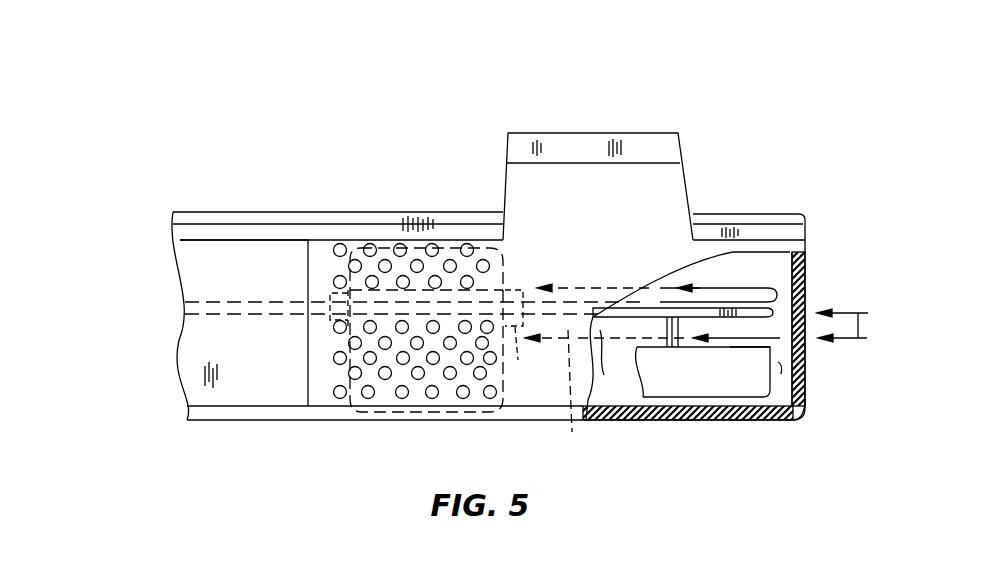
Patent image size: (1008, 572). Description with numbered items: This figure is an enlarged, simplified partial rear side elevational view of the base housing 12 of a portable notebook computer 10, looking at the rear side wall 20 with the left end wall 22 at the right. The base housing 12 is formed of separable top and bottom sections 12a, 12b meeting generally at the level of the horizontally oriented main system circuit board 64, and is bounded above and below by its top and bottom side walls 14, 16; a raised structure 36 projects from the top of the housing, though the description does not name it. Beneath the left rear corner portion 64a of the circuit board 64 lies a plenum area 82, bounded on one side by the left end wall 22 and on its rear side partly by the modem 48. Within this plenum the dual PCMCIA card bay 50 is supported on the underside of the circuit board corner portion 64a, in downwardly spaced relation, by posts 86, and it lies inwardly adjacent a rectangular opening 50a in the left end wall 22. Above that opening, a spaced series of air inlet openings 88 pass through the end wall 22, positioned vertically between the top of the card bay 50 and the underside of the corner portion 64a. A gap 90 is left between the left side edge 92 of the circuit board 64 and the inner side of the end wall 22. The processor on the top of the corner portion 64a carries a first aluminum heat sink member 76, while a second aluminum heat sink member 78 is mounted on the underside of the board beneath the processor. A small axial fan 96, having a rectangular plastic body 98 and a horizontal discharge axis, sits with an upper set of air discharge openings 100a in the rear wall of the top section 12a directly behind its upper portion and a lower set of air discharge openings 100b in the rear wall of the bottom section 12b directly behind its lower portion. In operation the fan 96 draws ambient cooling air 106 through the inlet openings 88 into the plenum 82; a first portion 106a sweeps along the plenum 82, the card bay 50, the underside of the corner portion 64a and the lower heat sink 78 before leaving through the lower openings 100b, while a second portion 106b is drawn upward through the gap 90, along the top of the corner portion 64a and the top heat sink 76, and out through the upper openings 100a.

The portable notebook computer 10 is at (745, 82).
The base housing 12 is at (334, 194).
The top base housing section 12a is at (204, 253).
The bottom base housing section 12b is at (205, 353).
The top side wall 14 is at (763, 214).
The bottom side wall 16 is at (672, 421).
The rear side wall 20 is at (268, 364).
The left end wall 22 is at (803, 258).
The handle base 36 is at (696, 170).
The modem 48 is at (616, 393).
The dual PCMCIA card bay 50 is at (747, 402).
The rectangular opening 50a is at (803, 390).
The main system circuit board 64 is at (193, 299).
The left rear corner portion of the circuit board 64a is at (657, 305).
The first aluminum heat sink member 76 is at (518, 290).
The second aluminum heat sink member 78 is at (515, 356).
The plenum area 82 is at (790, 368).
The posts 86 is at (672, 346).
The air inlet openings 88 is at (799, 312).
The gap 90 is at (770, 342).
The left side edge of the circuit board 92 is at (780, 302).
The axial fan 96 is at (509, 246).
The fan body 98 is at (393, 408).
The upper set of air discharge openings 100a is at (335, 282).
The lower set of air discharge openings 100b is at (336, 364).
The ambient cooling air 106 is at (858, 313).
The first portion of air 106a is at (571, 430).
The second portion of air 106b is at (660, 303).